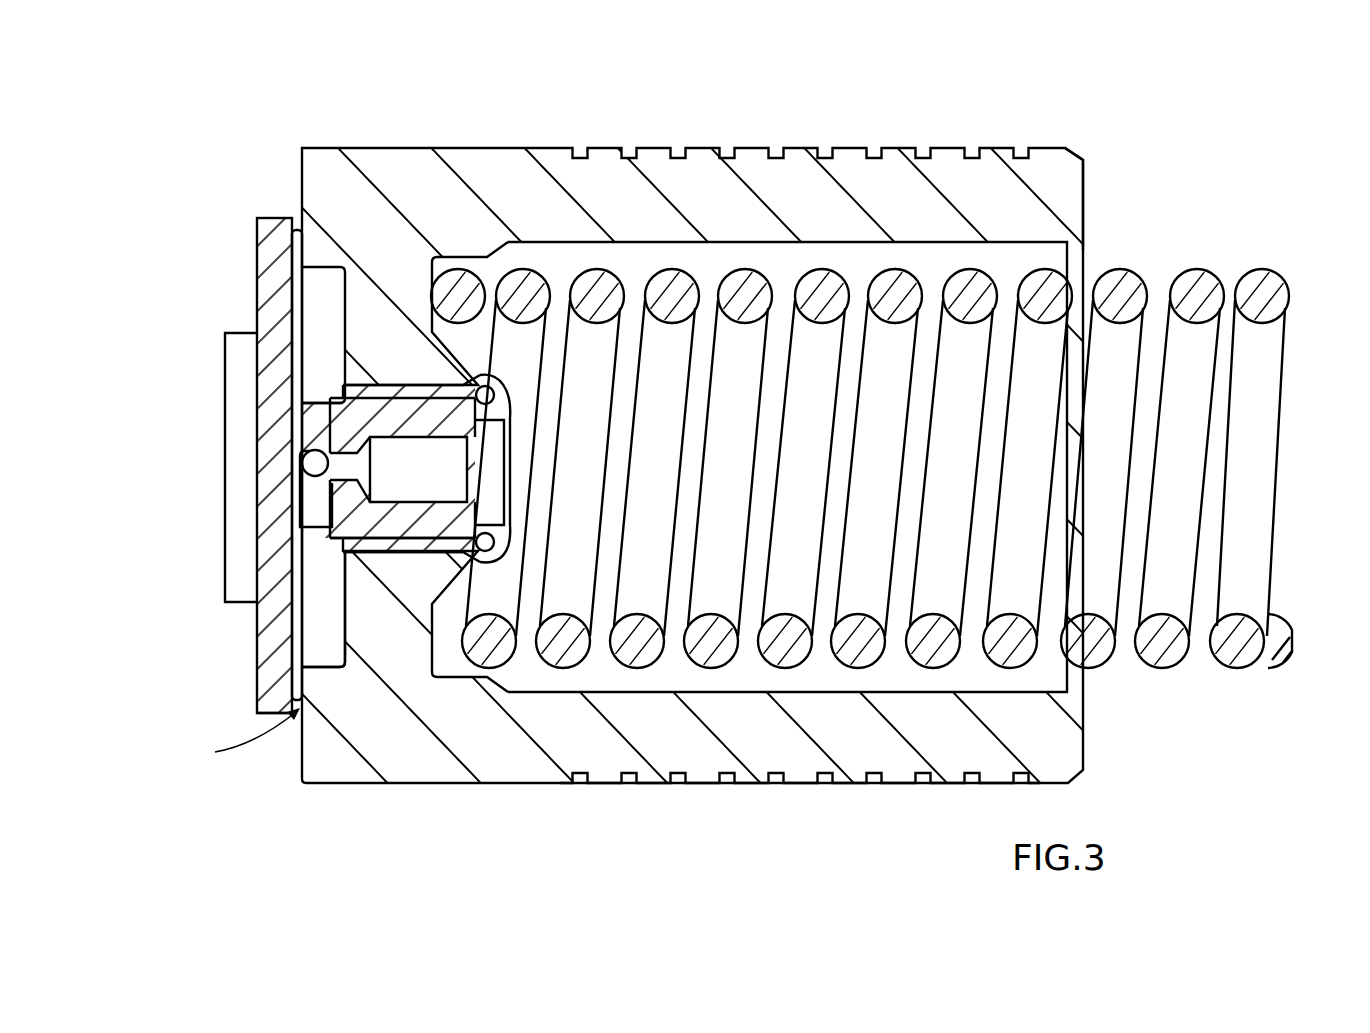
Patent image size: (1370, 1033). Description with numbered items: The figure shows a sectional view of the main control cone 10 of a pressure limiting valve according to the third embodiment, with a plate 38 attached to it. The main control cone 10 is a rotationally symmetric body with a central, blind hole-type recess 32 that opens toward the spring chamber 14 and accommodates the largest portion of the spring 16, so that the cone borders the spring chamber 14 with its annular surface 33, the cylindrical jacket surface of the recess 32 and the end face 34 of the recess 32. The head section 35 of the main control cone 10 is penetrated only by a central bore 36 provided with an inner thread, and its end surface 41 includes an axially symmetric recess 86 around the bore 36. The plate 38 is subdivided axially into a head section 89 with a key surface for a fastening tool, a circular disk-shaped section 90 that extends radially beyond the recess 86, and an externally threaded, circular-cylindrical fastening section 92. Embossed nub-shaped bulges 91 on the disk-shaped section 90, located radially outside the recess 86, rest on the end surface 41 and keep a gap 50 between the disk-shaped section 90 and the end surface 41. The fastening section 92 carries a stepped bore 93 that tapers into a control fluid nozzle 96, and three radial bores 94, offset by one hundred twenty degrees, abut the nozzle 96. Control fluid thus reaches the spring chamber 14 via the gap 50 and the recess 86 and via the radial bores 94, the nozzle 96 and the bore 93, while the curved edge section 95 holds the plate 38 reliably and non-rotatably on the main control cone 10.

The main control cone 10 is at (1050, 150).
The spring chamber 14 is at (1160, 729).
The spring 16 is at (1203, 290).
The recess 32 is at (932, 253).
The annular surface 33 is at (1088, 188).
The end face 34 is at (437, 332).
The head section 35 is at (410, 767).
The bore 36 is at (405, 555).
The plate 38 is at (258, 237).
The end surface 41 is at (293, 160).
The gap 50 is at (240, 737).
The recess 86 is at (327, 648).
The head section 89 is at (238, 383).
The circular disk-shaped section 90 is at (272, 290).
The nub-shaped bulges 91 is at (297, 668).
The fastening section 92 is at (395, 413).
The stepped bore 93 is at (427, 438).
The radial bores 94 is at (313, 502).
The curved edge section 95 is at (500, 546).
The control fluid nozzle 96 is at (336, 450).